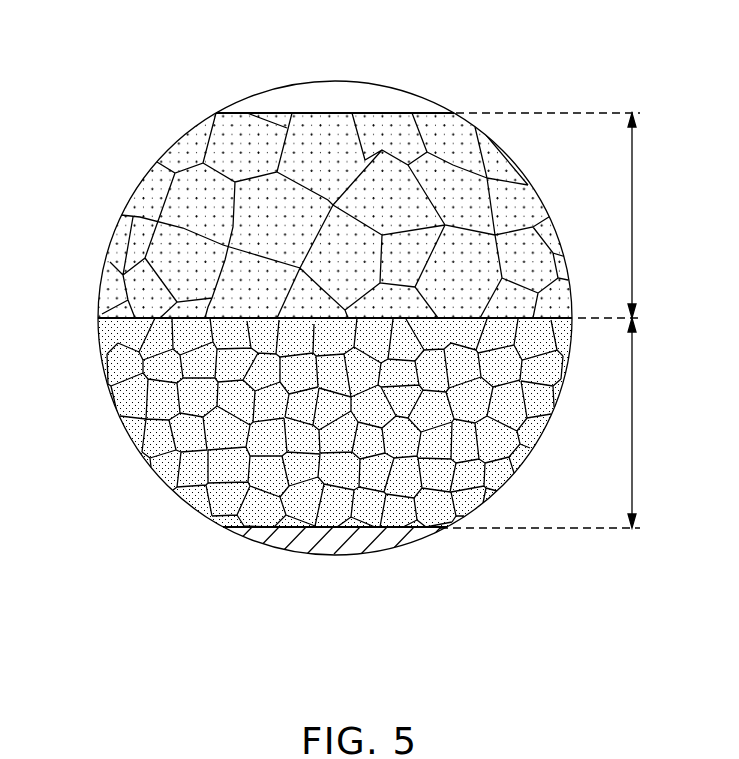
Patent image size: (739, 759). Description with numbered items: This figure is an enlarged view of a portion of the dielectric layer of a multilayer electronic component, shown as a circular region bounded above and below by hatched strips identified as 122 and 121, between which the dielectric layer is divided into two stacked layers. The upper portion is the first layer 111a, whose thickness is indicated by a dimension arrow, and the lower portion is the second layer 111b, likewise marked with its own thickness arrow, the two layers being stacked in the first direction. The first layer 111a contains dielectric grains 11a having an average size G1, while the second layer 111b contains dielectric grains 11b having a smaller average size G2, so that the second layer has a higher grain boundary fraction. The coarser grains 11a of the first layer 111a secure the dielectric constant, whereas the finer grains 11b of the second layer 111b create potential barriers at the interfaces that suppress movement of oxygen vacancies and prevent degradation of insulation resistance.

The upper coating layer 122 is at (333, 87).
The lower coating layer 121 is at (337, 540).
The dielectric grains 11a is at (143, 210).
The dielectric grains 11b is at (153, 382).
The first layer 111a is at (577, 215).
The second layer 111b is at (569, 423).